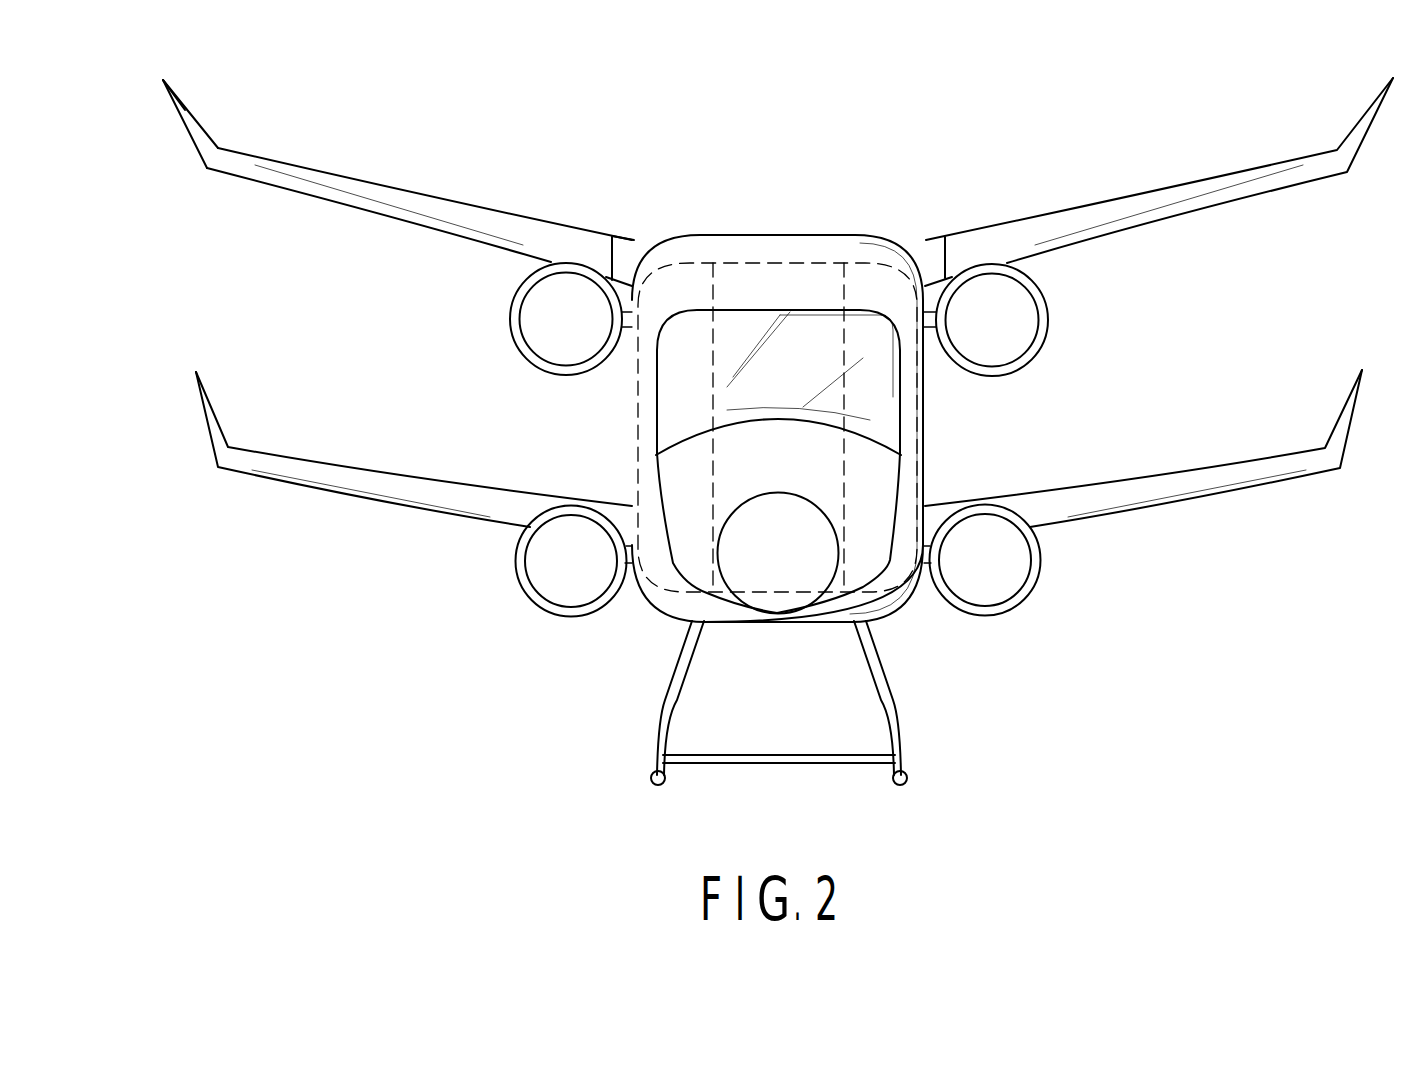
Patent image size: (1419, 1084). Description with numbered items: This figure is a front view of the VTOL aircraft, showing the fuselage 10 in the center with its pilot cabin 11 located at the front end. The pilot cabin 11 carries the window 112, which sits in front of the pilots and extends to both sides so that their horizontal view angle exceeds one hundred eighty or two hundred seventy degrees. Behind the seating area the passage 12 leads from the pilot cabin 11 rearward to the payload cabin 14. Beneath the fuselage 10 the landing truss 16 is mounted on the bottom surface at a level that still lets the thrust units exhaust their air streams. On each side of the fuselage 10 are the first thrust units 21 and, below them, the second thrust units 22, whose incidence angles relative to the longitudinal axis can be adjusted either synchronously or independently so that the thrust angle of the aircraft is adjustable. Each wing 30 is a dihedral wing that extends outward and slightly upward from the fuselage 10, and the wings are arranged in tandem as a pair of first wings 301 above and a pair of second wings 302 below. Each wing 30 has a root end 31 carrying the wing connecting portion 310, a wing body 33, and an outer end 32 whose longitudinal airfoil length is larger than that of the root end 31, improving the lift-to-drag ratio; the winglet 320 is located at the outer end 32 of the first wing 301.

The fuselage 10 is at (874, 221).
The pilot cabin 11 is at (881, 480).
The window 112 is at (885, 360).
The passage 12 is at (830, 485).
The payload cabin 14 is at (900, 557).
The landing truss 16 is at (660, 735).
The first thrust units 21 is at (528, 313).
The second thrust units 22 is at (525, 577).
The wing 30 is at (427, 187).
The first wings 301 is at (280, 183).
The second wings 302 is at (337, 483).
The root end 31 is at (658, 228).
The wing connecting portion 310 is at (633, 243).
The outer end 32 is at (192, 144).
The winglet 320 is at (183, 113).
The wing body 33 is at (370, 224).